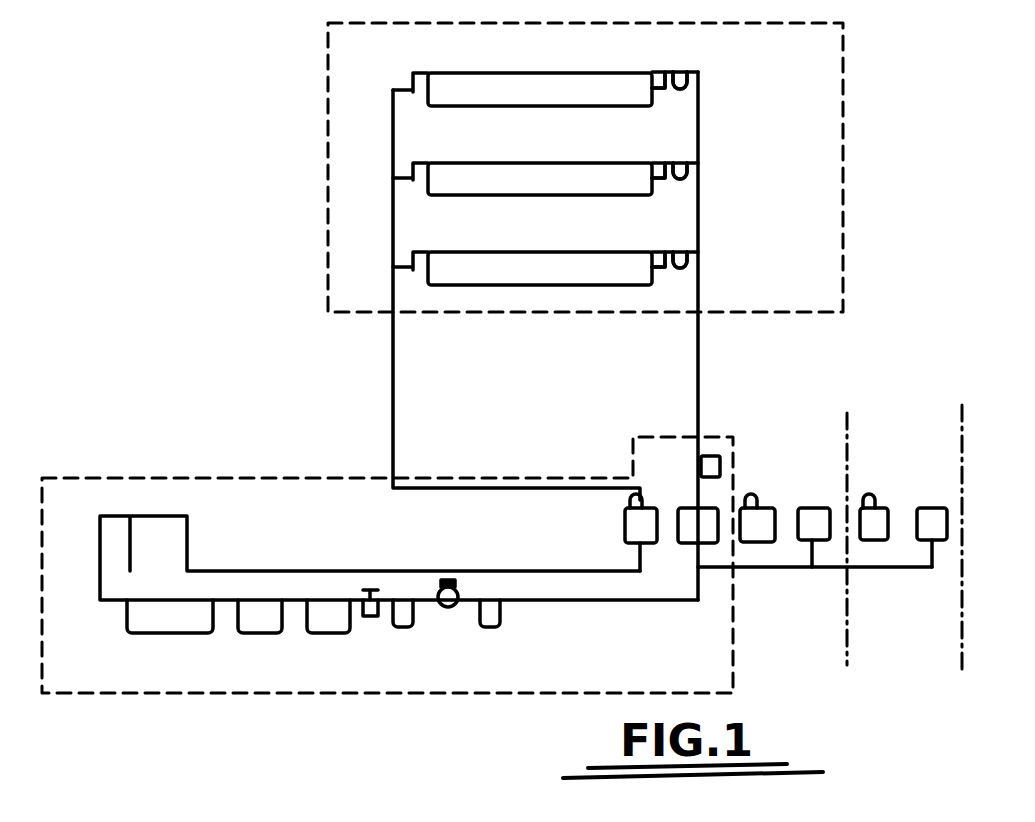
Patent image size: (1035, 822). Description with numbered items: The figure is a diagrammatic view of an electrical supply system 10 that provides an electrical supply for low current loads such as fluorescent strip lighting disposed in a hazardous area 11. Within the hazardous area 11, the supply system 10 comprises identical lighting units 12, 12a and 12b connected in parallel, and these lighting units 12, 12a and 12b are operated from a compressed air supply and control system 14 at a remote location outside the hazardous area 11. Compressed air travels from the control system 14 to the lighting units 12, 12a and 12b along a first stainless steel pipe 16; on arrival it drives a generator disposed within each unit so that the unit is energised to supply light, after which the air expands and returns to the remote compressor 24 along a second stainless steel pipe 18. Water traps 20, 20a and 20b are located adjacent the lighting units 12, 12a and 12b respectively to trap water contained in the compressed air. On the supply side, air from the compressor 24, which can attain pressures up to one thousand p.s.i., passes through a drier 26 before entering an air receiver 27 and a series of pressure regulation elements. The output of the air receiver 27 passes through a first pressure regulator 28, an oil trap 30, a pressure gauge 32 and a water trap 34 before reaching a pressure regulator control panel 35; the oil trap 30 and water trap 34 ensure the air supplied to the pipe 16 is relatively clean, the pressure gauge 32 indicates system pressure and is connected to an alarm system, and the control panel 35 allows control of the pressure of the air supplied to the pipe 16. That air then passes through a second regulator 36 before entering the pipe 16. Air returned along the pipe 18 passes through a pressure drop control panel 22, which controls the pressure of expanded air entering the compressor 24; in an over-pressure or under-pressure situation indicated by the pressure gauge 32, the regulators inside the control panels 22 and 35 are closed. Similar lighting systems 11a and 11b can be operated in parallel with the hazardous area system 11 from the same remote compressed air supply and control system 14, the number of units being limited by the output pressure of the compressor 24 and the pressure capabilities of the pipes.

The electrical supply system 10 is at (125, 371).
The hazardous area 11 is at (847, 158).
The lighting system 11a is at (806, 418).
The lighting system 11b is at (928, 420).
The lighting unit 12 is at (562, 89).
The lighting unit 12a is at (555, 170).
The lighting unit 12b is at (535, 255).
The compressed air supply and control system 14 is at (175, 478).
The first stainless steel pipe 16 is at (700, 382).
The second stainless steel pipe 18 is at (392, 372).
The water trap 20 is at (682, 86).
The water trap 20a is at (685, 180).
The water trap 20b is at (682, 262).
The pressure drop control panel 22 is at (620, 527).
The compressor 24 is at (173, 634).
The drier 26 is at (252, 634).
The air receiver 27 is at (320, 634).
The first pressure regulator 28 is at (369, 618).
The oil trap 30 is at (404, 628).
The pressure gauge 32 is at (451, 608).
The water trap 34 is at (497, 628).
The pressure regulator control panel 35 is at (690, 515).
The second regulator 36 is at (722, 465).